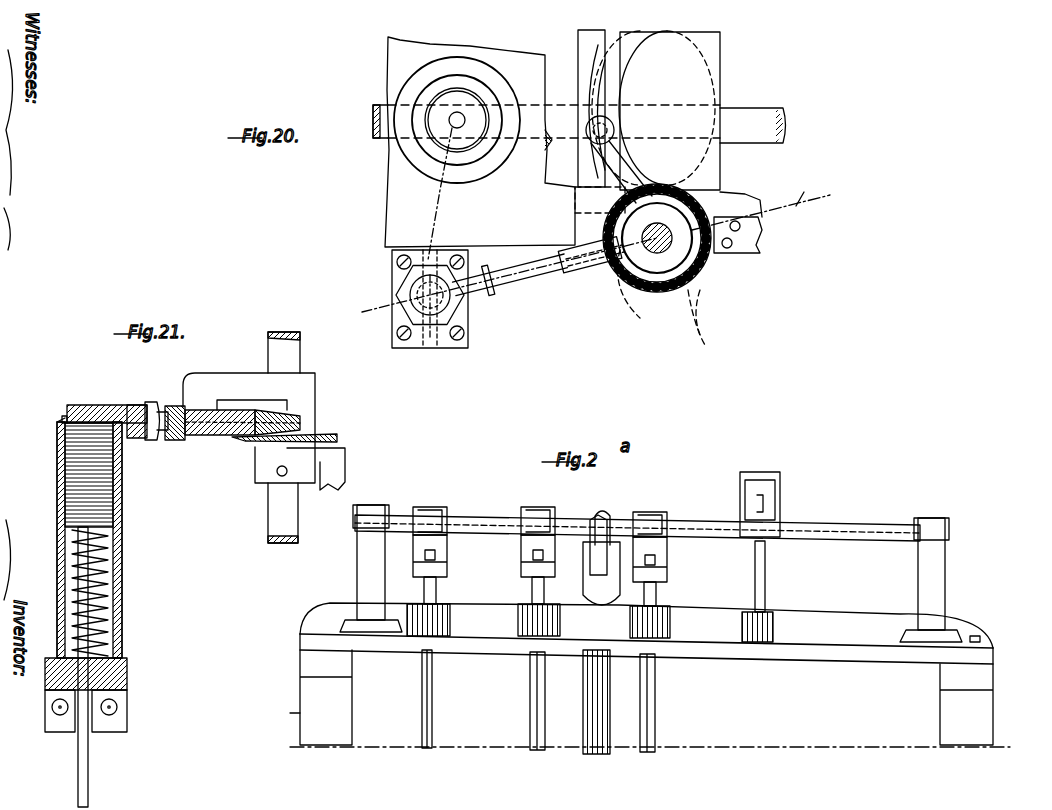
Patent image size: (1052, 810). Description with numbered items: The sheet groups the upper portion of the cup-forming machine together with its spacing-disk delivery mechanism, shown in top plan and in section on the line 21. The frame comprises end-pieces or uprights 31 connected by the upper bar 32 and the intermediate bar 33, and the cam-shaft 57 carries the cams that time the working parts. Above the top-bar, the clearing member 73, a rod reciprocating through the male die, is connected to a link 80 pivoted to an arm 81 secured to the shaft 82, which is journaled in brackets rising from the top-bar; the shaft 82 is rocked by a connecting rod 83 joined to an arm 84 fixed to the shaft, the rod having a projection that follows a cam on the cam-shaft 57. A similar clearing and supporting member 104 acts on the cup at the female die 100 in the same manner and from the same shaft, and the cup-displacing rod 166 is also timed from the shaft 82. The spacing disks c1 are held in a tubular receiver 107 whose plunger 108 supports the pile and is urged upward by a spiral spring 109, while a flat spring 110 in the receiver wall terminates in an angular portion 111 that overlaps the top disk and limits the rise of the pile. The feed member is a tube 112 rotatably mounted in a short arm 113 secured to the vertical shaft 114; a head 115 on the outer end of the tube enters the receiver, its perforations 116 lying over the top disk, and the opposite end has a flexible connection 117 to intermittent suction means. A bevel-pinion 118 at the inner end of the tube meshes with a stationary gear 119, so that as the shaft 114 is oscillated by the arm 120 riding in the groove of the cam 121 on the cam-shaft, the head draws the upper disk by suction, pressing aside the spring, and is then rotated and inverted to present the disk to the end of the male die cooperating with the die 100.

In FIG. 20, the intermediate bar 33 is at (480, 142).
In FIG. 20, the female die 100 is at (455, 118).
In FIG. 20, the cam-shaft 57 is at (780, 122).
In FIG. 20, the cam 121 is at (722, 80).
In FIG. 20, the arm 120 is at (640, 172).
In FIG. 20, the vertical shaft 114 is at (705, 270).
In FIG. 21, the vertical shaft 114 is at (300, 352).
In FIG. 20, the section line 21— 21 is at (763, 211).
In FIG. 20, the head 115 is at (442, 350).
In FIG. 21, the head 115 is at (88, 405).
In FIG. 20, the angular portion 111 is at (418, 292).
In FIG. 21, the angular portion 111 is at (58, 420).
In FIG. 20, the tubular receiver 107 is at (470, 305).
In FIG. 21, the tubular receiver 107 is at (118, 580).
In FIG. 20, the tube 112 is at (530, 280).
In FIG. 21, the tube 112 is at (190, 440).
In FIG. 20, the short arm 113 is at (585, 268).
In FIG. 21, the short arm 113 is at (210, 385).
In FIG. 20, the bevel-pinion 118 is at (630, 292).
In FIG. 21, the bevel-pinion 118 is at (235, 436).
In FIG. 20, the gear 119 is at (680, 300).
In FIG. 21, the gear 119 is at (330, 440).
In FIG. 21, the flat spring 110 is at (57, 463).
In FIG. 21, the disk or cup-element c1 is at (113, 502).
In FIG. 21, the plunger 108 is at (110, 530).
In FIG. 21, the spiral spring 109 is at (100, 625).
In FIG. 21, the perforations 116 is at (62, 416).
In FIG. 21, the flexible connection 117 is at (285, 420).
In FIG. 2A, the end-pieces or uprights 31 is at (300, 713).
In FIG. 2A, the upper bar 32 is at (958, 628).
In FIG. 2A, the shaft 82 is at (840, 525).
In FIG. 2A, the arm 81 is at (445, 510).
In FIG. 2A, the link 80 is at (452, 566).
In FIG. 2A, the clearing and supporting member 104 is at (530, 596).
In FIG. 2A, the arm 84 is at (594, 518).
In FIG. 2A, the rod 166 is at (765, 580).
In FIG. 2A, the clearing member 73 is at (420, 748).
In FIG. 2A, the connecting rod 83 is at (596, 754).